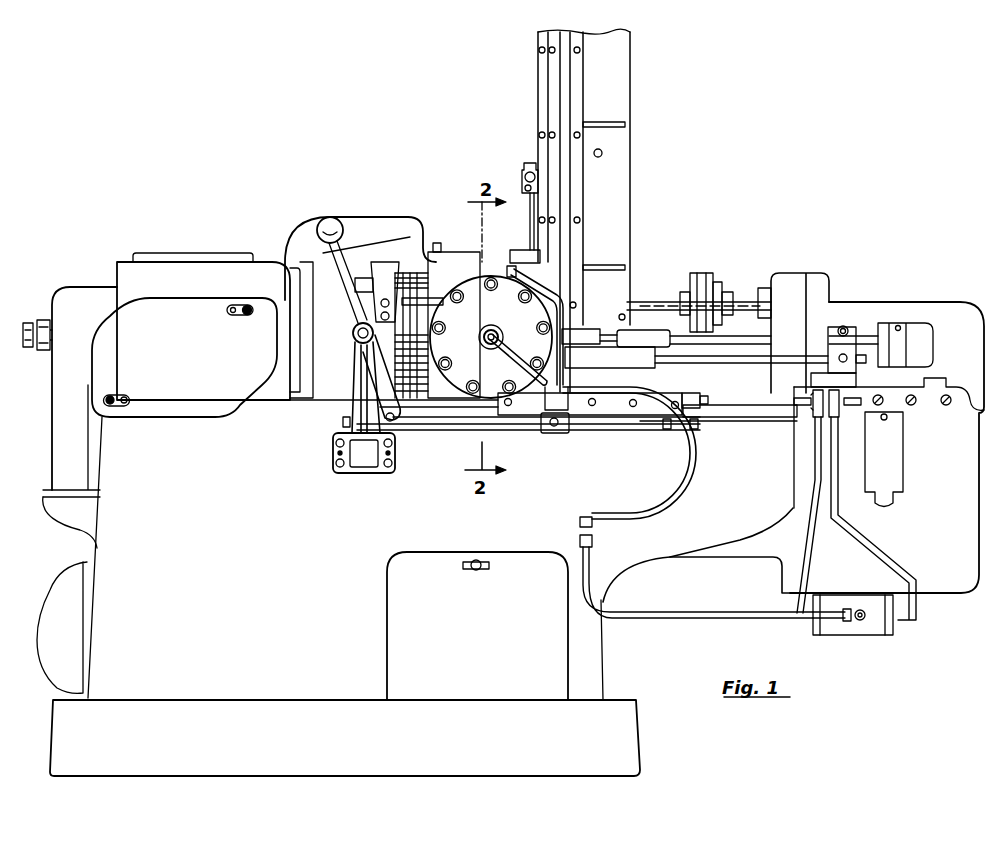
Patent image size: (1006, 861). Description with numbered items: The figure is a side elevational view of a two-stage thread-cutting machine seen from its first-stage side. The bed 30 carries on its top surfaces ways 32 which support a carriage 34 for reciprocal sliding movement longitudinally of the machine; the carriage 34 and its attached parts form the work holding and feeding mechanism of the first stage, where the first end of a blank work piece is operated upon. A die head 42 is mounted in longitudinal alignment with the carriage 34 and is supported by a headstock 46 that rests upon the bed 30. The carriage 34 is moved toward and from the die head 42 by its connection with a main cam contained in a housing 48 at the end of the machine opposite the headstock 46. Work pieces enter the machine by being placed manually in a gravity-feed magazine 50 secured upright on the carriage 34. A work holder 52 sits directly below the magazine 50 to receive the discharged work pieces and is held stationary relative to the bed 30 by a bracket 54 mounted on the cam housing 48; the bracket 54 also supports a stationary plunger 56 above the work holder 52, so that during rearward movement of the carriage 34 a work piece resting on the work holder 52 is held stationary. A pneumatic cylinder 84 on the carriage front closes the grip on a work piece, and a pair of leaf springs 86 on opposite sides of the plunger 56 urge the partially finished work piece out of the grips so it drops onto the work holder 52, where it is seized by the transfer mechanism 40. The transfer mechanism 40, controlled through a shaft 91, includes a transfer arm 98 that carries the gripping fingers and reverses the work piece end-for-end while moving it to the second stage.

The bed 30 is at (193, 636).
The ways 32 is at (725, 408).
The carriage 34 is at (686, 395).
The transfer mechanism 40 is at (518, 170).
The die head 42 is at (413, 265).
The headstock 46 is at (186, 290).
The cam housing 48 is at (929, 501).
The gravity-feed magazine 50 is at (620, 200).
The work holder 52 is at (641, 352).
The bracket 54 is at (862, 377).
The stationary plunger 56 is at (664, 332).
The pneumatic cylinder 84 is at (478, 322).
The leaf springs 86 is at (590, 326).
The shaft 91 is at (651, 300).
The transfer arm 98 is at (533, 233).